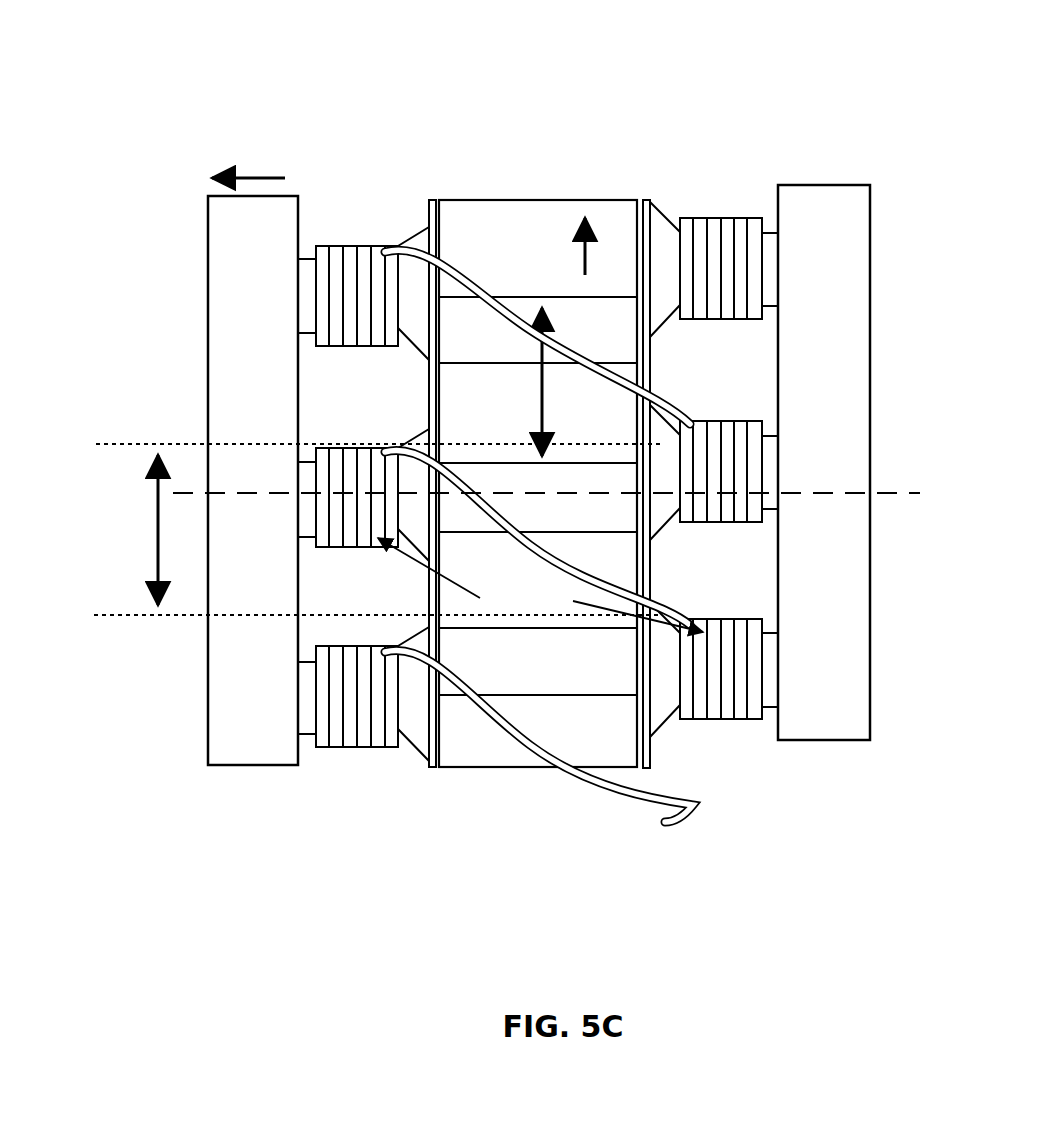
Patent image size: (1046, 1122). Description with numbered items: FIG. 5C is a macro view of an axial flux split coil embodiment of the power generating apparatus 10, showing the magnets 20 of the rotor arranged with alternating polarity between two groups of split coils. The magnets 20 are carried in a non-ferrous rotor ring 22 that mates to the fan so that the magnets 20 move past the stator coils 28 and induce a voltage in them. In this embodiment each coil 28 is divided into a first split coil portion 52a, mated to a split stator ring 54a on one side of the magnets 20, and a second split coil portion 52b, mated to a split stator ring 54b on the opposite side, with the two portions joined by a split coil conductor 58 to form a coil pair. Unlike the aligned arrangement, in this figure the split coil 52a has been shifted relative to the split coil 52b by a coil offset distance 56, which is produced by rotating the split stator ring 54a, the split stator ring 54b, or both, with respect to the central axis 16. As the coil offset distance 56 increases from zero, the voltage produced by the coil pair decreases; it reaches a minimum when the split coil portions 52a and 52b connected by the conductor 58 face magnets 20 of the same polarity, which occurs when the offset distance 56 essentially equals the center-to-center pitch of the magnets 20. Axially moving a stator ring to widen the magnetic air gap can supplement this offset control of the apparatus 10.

The power generating apparatus 10 is at (497, 83).
The central axis of rotation 16 is at (890, 490).
The permanent magnets 20 is at (570, 495).
The rotor ring 22 is at (555, 461).
The coils 28 is at (700, 437).
The split coil portion 52a is at (338, 530).
The split coil portion 52b is at (727, 708).
The split stator ring 54a is at (255, 735).
The split stator ring 54b is at (839, 715).
The coil offset distance 56 is at (150, 520).
The split coil conductor 58 is at (665, 590).